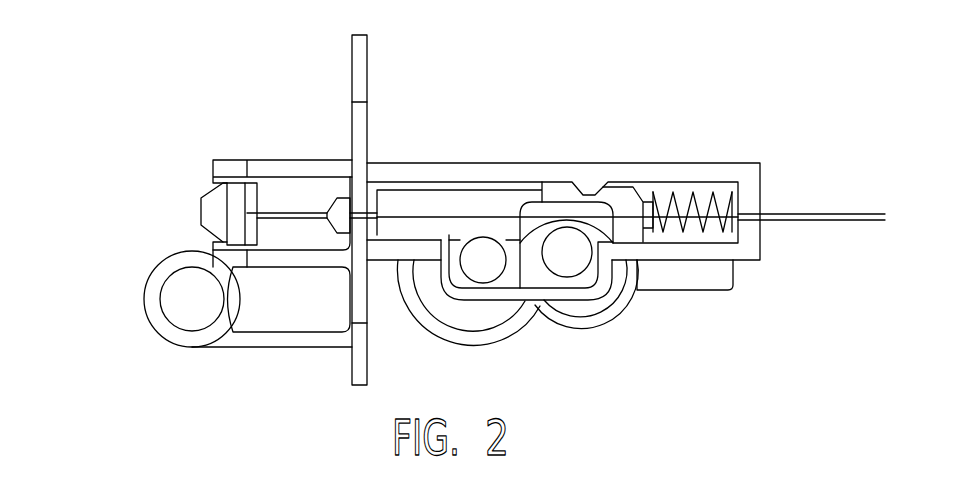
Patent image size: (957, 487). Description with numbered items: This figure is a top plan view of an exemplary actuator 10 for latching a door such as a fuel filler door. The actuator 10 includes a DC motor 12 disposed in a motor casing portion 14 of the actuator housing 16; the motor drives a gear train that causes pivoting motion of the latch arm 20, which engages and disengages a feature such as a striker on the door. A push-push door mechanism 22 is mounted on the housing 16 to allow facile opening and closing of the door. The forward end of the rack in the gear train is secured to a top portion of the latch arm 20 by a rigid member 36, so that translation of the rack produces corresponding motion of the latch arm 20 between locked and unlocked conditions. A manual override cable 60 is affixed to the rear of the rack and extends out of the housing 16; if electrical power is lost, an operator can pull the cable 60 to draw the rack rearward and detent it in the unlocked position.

The actuator 10 is at (657, 140).
The DC motor 12 is at (546, 201).
The motor casing portion 14 is at (635, 292).
The actuator housing 16 is at (712, 164).
The latch arm 20 is at (201, 200).
The push-push door mechanism 22 is at (142, 289).
The rigid member 36 is at (287, 214).
The manual override cable 60 is at (768, 214).